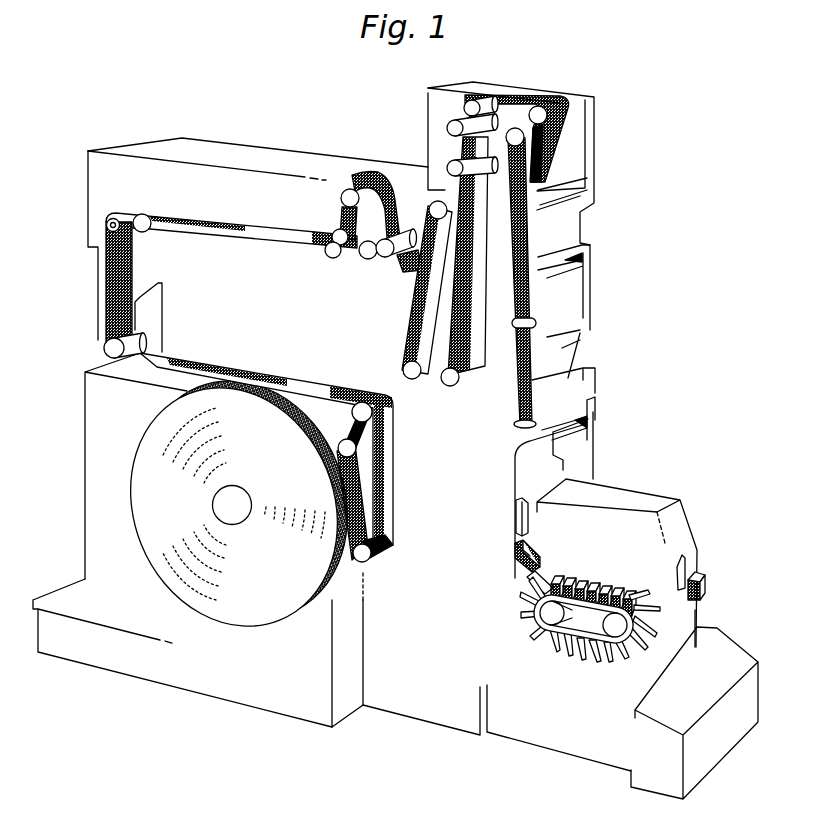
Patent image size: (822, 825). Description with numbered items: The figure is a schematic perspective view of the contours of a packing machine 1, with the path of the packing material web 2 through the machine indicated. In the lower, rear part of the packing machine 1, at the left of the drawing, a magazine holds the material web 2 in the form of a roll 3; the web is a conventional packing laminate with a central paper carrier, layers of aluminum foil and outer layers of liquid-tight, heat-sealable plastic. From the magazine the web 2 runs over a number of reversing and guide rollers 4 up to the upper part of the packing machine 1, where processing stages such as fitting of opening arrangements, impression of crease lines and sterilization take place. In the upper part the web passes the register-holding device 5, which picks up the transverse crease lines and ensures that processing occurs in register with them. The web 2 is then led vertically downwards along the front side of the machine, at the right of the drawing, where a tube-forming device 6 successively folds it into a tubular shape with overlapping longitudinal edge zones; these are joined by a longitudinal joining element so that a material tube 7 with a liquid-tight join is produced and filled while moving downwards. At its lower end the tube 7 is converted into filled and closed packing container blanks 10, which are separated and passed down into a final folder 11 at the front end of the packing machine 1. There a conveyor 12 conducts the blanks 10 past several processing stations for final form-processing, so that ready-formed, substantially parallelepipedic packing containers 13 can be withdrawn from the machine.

The packing machine 1 is at (153, 665).
The packing material web 2 is at (116, 283).
The roll 3 is at (158, 445).
The reversing and guide rollers 4 is at (106, 348).
The register-holding device 5 is at (350, 188).
The tube-forming device 6 is at (538, 326).
The material tube 7 is at (582, 362).
The packing container blanks 10 is at (533, 555).
The final folder 11 is at (555, 668).
The conveyor 12 is at (660, 642).
The packing containers 13 is at (705, 582).